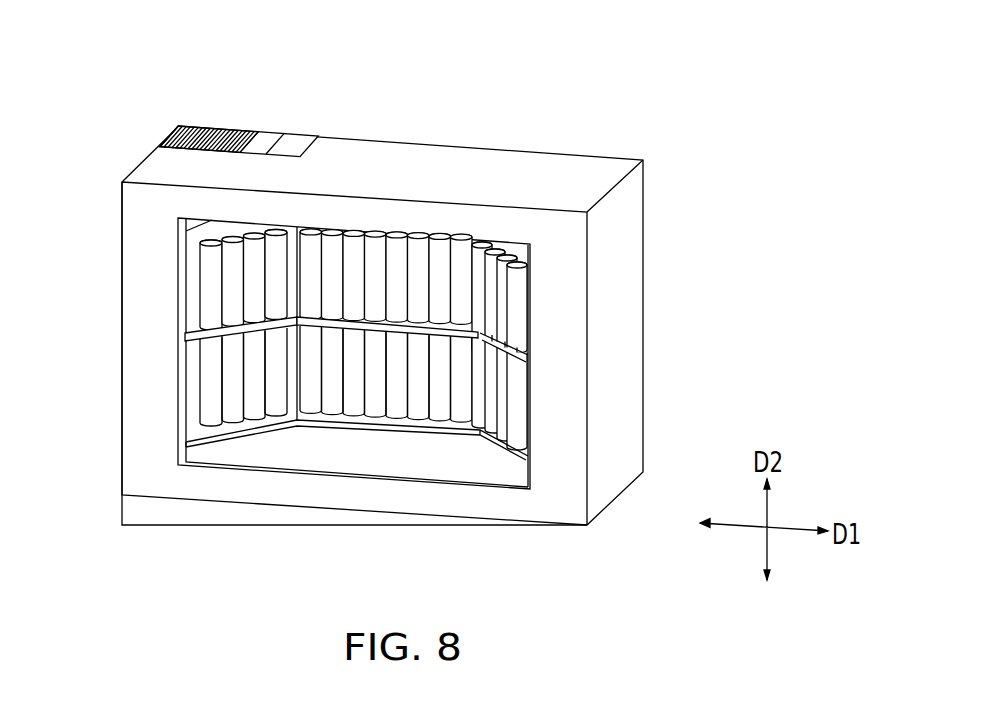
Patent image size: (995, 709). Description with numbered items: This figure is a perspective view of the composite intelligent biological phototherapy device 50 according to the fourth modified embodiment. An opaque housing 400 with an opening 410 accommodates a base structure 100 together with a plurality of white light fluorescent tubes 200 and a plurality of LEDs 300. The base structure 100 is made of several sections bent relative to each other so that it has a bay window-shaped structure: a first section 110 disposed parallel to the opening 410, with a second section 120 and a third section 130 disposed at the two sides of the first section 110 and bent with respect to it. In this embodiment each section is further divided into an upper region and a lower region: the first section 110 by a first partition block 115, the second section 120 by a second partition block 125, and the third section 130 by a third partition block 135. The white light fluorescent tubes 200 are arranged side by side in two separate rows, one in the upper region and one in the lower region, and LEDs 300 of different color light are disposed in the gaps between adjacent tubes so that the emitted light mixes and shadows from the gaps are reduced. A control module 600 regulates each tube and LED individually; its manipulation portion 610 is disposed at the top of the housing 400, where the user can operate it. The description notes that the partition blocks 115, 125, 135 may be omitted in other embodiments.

The composite intelligent biological phototherapy device 50 is at (140, 66).
The base structure 100 is at (373, 341).
The first section 110 is at (370, 427).
The first partition block 115 is at (398, 323).
The second section 120 is at (232, 432).
The second partition block 125 is at (182, 335).
The third section 130 is at (512, 456).
The third partition block 135 is at (528, 352).
The white light fluorescent tubes 200 is at (240, 262).
The LEDs 300 is at (262, 300).
The housing 400 is at (625, 308).
The opening 410 is at (203, 215).
The control module 600 is at (279, 123).
The manipulation portion 610 is at (259, 140).